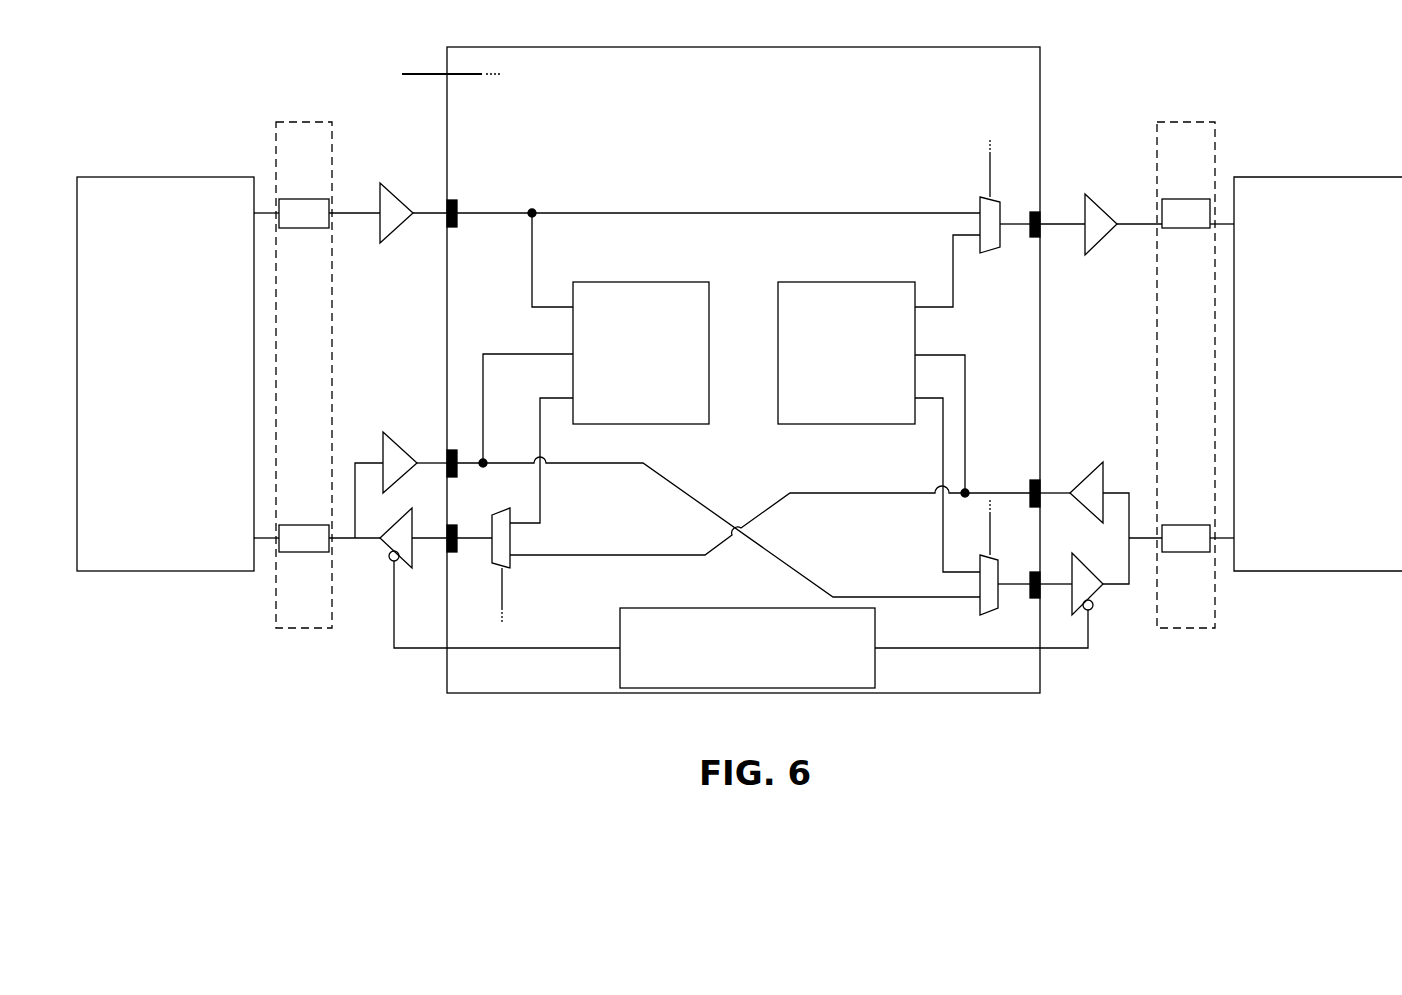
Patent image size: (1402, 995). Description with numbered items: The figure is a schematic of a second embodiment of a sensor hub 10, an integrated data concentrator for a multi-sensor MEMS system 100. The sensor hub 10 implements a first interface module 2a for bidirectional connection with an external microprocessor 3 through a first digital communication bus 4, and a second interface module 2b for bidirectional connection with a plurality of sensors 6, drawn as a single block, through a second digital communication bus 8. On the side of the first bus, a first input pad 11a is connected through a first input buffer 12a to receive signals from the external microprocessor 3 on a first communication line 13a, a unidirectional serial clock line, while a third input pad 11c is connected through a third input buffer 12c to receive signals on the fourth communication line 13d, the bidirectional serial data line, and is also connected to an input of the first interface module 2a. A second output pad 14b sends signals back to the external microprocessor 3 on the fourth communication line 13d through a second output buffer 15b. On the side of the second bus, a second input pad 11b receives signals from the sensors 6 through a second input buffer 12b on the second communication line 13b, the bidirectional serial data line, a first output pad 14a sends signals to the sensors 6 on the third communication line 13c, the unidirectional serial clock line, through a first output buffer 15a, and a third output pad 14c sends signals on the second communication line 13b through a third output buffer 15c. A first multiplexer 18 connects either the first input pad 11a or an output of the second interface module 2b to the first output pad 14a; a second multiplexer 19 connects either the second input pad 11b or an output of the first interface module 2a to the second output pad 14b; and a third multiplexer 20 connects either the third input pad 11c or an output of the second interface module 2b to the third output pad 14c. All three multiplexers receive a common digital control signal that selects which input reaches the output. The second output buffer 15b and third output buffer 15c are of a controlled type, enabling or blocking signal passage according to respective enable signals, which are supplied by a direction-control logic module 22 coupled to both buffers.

The multi-sensor MEMS system 100 is at (1127, 48).
The sensor hub 10 is at (555, 46).
The external microprocessor 3 is at (149, 562).
The first digital communication bus 4 is at (297, 630).
The plurality of sensors 6 is at (1340, 558).
The second digital communication bus 8 is at (1192, 630).
The first interface module 2a is at (693, 292).
The second interface module 2b is at (785, 292).
The first input pad 11a is at (460, 206).
The second input pad 11b is at (1032, 481).
The third input pad 11c is at (449, 452).
The first input buffer 12a is at (391, 240).
The second input buffer 12b is at (1087, 480).
The third input buffer 12c is at (388, 449).
The first communication line 13a is at (357, 212).
The second communication line 13b is at (1141, 538).
The third communication line 13c is at (1141, 224).
The fourth communication line 13d is at (348, 545).
The first output pad 14a is at (1035, 212).
The second output pad 14b is at (453, 527).
The third output pad 14c is at (1033, 599).
The first output buffer 15a is at (1097, 233).
The second output buffer 15b is at (409, 524).
The third output buffer 15c is at (1083, 572).
The first multiplexer 18 is at (988, 253).
The second multiplexer 19 is at (512, 540).
The third multiplexer 20 is at (980, 608).
The direction-control logic module 22 is at (630, 612).